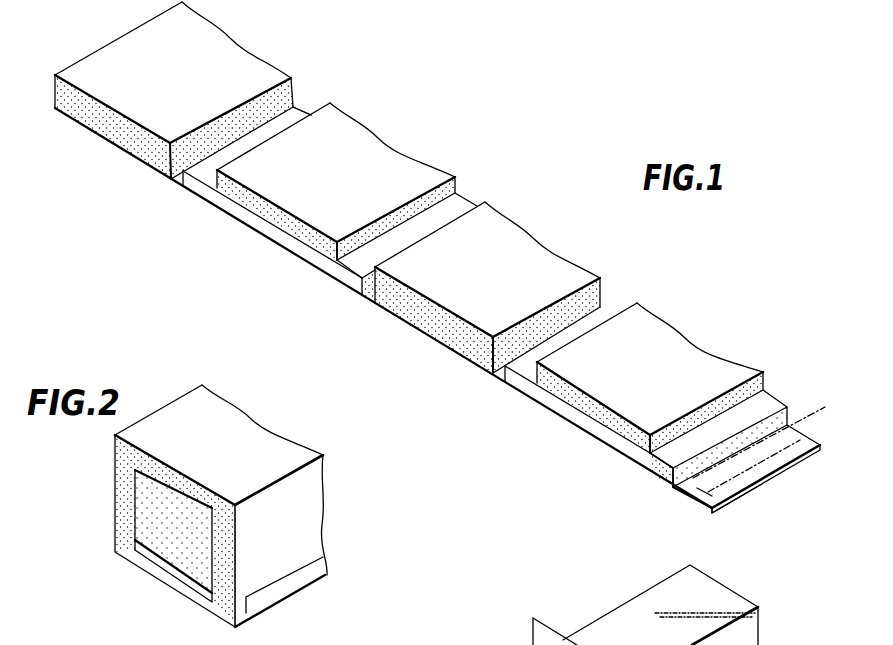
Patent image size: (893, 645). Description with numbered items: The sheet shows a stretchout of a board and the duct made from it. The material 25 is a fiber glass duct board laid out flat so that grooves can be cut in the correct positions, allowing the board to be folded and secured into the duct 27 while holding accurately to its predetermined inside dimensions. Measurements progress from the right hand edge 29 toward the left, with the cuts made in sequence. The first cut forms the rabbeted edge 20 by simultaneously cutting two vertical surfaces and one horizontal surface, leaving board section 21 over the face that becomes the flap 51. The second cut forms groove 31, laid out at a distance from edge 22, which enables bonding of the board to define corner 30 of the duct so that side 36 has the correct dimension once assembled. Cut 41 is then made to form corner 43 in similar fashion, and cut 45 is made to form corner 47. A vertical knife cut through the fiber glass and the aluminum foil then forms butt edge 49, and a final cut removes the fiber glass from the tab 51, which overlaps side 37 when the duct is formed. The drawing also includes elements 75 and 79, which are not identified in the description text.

In FIG. 1, the rabbeted edge 20 is at (672, 470).
In FIG. 1, the board section 21 is at (697, 488).
In FIG. 1, the edge 22 is at (673, 487).
In FIG. 1, the material 25 is at (258, 181).
In FIG. 2, the duct 27 is at (219, 510).
In FIG. 1, the right hand edge 29 is at (767, 477).
In FIG. 2, the corner 30 is at (143, 555).
In FIG. 1, the groove 31 is at (610, 310).
In FIG. 2, the side 36 is at (178, 567).
In FIG. 2, the side 37 is at (300, 527).
In FIG. 1, the cut 41 is at (457, 210).
In FIG. 2, the corner 43 is at (130, 484).
In FIG. 1, the cut 45 is at (303, 112).
In FIG. 2, the corner 47 is at (208, 516).
In FIG. 1, the butt edge 49 is at (127, 24).
In FIG. 1, the flap 51 is at (700, 507).
In FIG. 2, the flap 51 is at (258, 602).
In FIG. 1, the lower body 75 is at (770, 637).
In FIG. 1, the lower body edge 79 is at (577, 644).